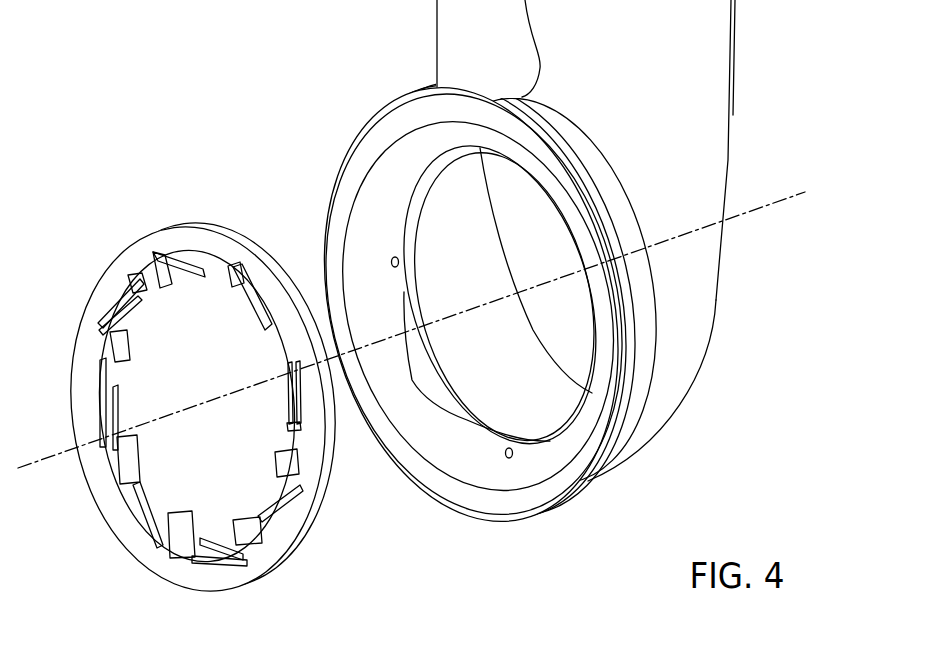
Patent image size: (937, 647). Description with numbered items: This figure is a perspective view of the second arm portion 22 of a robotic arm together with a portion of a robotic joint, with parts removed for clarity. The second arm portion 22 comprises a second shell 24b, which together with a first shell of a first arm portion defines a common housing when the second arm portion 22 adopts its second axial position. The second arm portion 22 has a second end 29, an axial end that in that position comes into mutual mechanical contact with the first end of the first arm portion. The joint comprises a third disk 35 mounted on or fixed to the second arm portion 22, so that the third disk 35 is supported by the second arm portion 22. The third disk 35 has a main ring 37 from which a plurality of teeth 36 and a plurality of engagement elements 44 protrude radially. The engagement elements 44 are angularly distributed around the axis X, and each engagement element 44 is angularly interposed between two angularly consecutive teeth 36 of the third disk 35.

The second arm portion 22 is at (738, 114).
The second shell 24b is at (700, 307).
The second end 29 is at (373, 140).
The third disk 35 is at (186, 229).
The teeth 36 is at (224, 290).
The main ring 37 is at (277, 548).
The engagement elements 44 is at (203, 262).
The axis X is at (779, 202).